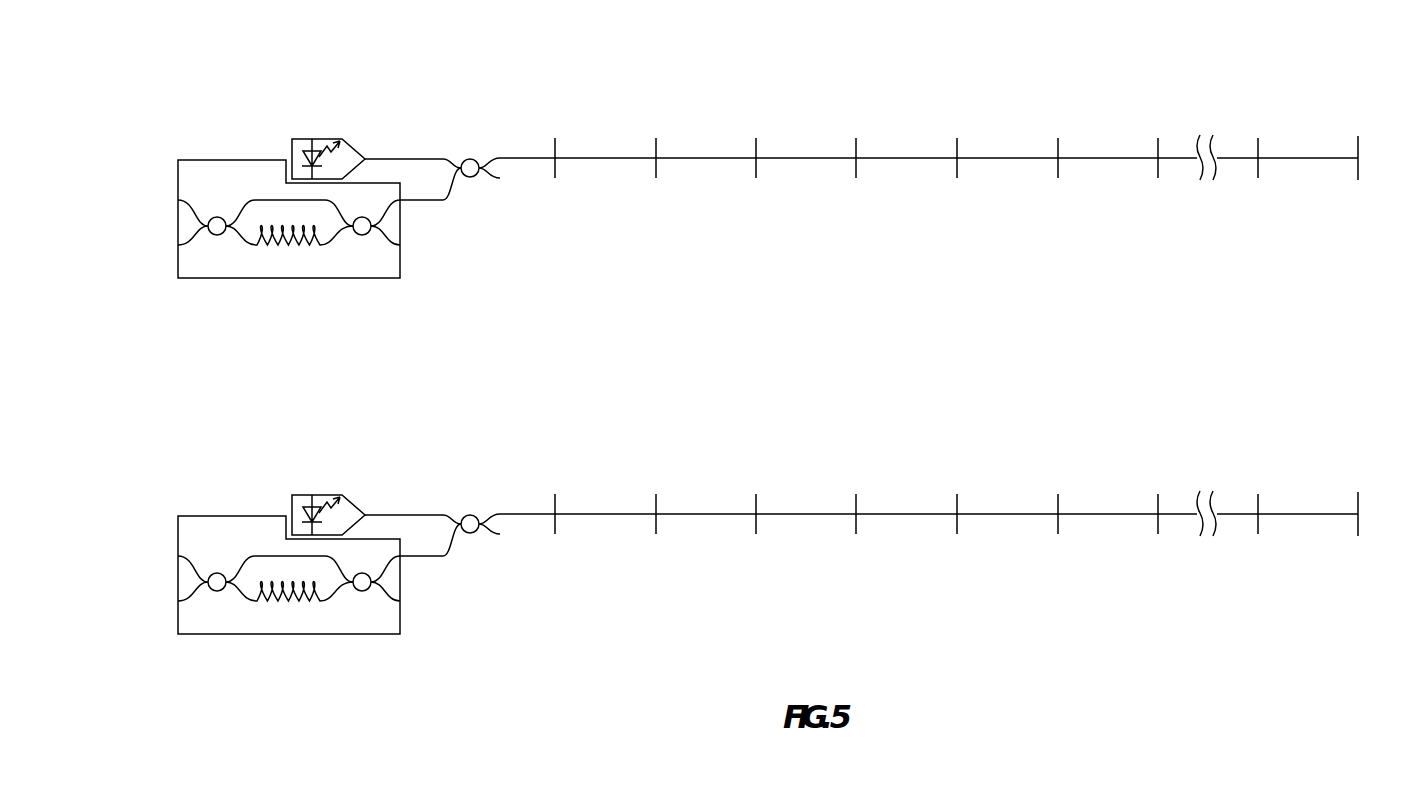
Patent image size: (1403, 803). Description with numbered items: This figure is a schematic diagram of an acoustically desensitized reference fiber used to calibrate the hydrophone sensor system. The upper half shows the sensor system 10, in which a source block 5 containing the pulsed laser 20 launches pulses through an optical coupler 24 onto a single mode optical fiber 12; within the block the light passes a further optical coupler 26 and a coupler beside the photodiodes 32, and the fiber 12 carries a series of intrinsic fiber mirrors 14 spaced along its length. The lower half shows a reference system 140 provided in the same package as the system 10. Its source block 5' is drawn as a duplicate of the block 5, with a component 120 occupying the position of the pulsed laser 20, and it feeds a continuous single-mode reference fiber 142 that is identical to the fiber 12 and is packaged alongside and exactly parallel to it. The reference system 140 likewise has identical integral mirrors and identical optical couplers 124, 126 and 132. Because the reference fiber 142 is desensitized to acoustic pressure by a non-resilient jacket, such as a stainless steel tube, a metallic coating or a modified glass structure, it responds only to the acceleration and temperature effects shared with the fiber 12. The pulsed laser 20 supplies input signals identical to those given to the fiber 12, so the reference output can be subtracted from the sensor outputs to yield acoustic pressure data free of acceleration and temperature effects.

The sensor system 10 is at (752, 180).
The light source module 5 is at (285, 212).
The pulsed laser 20 is at (312, 139).
The optical coupler 24 is at (465, 160).
The photodiodes 32 is at (217, 236).
The optical coupler 26 is at (363, 236).
The single mode optical fiber 12 is at (517, 160).
The intrinsic fiber mirrors 14 is at (652, 93).
The reference system 140 is at (750, 523).
The second light source module 5' is at (289, 568).
The laser diode / optical amplifier 120 is at (312, 495).
The optical coupler 124 is at (465, 516).
The optical coupler 132 is at (217, 592).
The optical coupler 126 is at (363, 592).
The reference fiber 142 is at (517, 516).